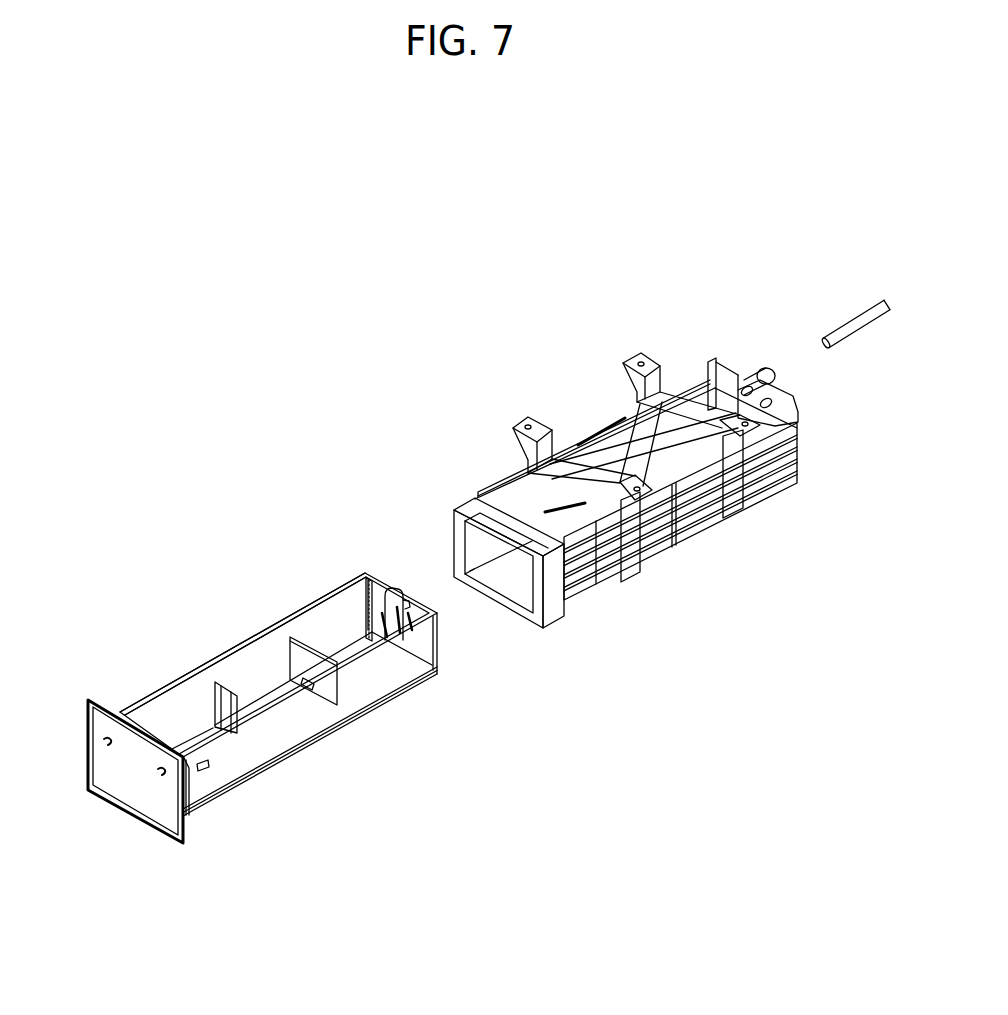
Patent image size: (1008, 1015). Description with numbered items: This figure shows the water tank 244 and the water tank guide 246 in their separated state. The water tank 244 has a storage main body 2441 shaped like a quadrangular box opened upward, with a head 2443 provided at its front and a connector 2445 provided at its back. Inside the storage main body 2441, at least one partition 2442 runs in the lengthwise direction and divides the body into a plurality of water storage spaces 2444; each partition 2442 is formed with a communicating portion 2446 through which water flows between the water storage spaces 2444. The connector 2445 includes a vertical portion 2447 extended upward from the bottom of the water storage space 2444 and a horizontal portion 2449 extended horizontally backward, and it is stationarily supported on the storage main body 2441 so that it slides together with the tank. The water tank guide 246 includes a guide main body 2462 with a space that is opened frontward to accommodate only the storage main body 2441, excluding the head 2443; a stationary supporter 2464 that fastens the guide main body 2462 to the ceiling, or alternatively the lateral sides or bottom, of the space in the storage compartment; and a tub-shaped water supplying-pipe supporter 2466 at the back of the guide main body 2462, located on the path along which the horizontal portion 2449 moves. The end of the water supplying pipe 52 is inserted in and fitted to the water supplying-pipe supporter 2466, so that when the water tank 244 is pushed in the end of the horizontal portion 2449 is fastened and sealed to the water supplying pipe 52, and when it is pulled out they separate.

The water tank 244 is at (115, 598).
The storage main body 2441 is at (172, 703).
The partition 2442 is at (220, 700).
The head 2443 is at (128, 795).
The water storage space 2444 is at (328, 632).
The connector 2445 is at (417, 496).
The communicating portion 2446 is at (305, 682).
The vertical portion 2447 is at (368, 594).
The horizontal portion 2449 is at (398, 590).
The water tank guide 246 is at (525, 333).
The guide main body 2462 is at (680, 533).
The stationary supporter 2464 is at (641, 358).
The water supplying-pipe supporter 2466 is at (750, 364).
The water supplying pipe 52 is at (850, 320).